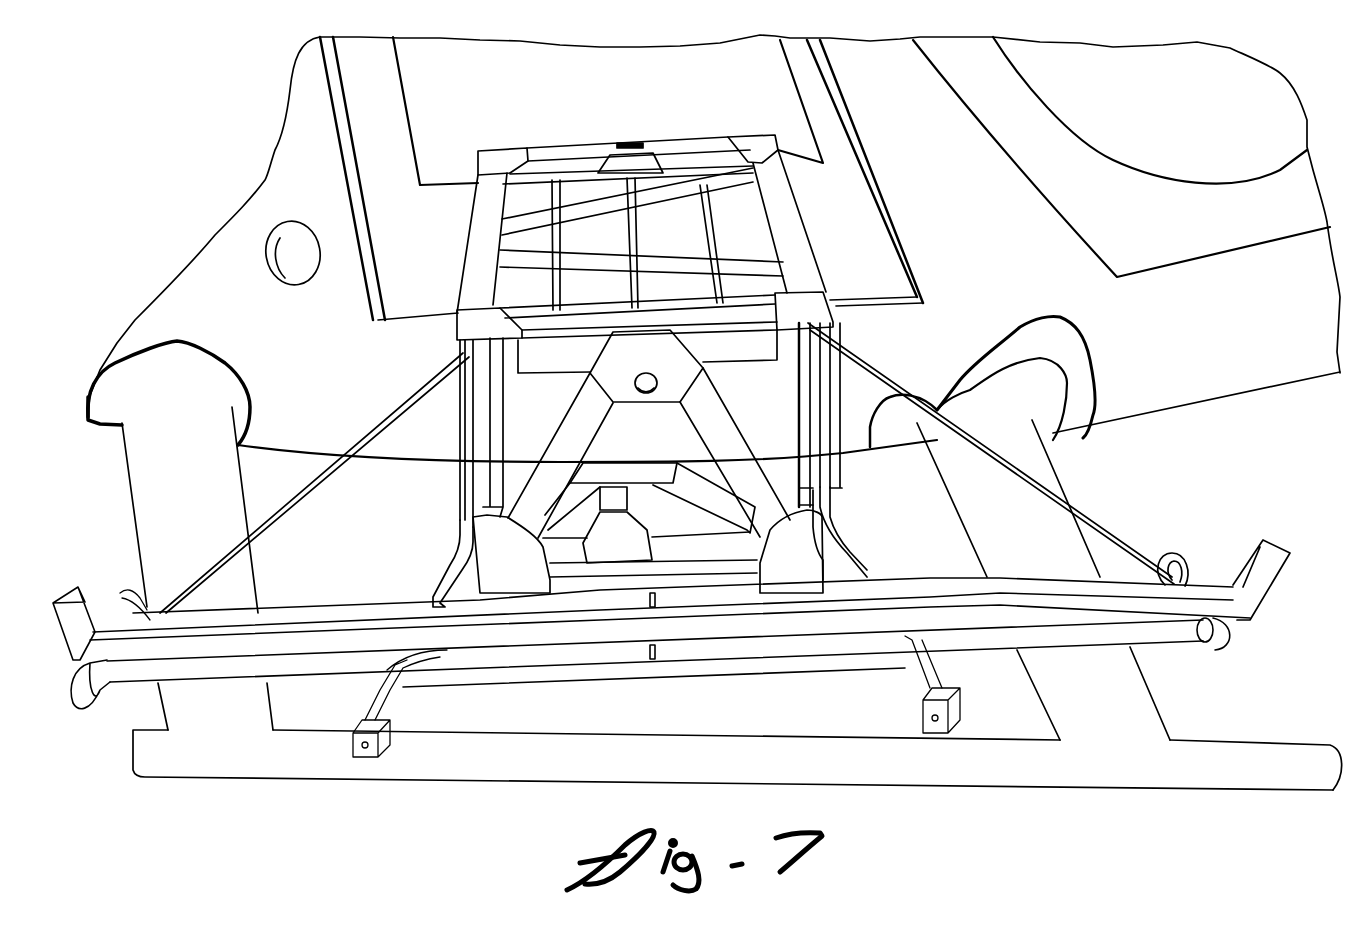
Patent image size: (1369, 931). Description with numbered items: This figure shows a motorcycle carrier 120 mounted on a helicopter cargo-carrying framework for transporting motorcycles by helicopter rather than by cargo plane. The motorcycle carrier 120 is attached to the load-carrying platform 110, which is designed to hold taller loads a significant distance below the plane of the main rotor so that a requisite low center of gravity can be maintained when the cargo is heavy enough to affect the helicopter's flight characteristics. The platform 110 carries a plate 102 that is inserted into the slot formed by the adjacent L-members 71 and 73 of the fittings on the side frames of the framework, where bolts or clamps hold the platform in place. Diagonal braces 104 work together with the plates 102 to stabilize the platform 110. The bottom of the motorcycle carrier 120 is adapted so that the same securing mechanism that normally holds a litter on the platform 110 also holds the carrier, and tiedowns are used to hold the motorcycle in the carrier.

The L-member 71 is at (457, 423).
The L-member 73 is at (473, 415).
The plate 102 is at (453, 556).
The brace 104 is at (860, 358).
The load-carrying platform 110 is at (1167, 552).
The motorcycle carrier 120 is at (1283, 577).